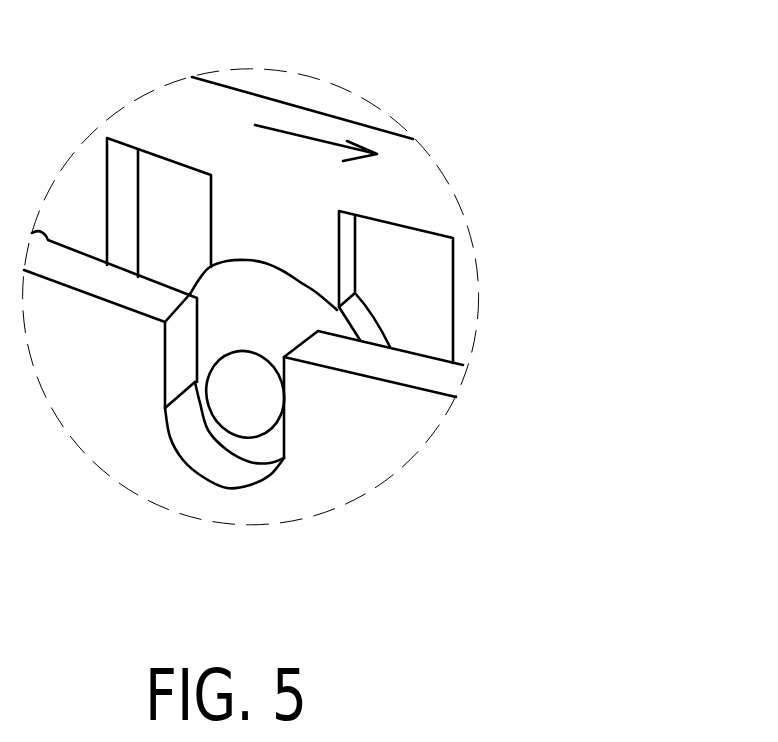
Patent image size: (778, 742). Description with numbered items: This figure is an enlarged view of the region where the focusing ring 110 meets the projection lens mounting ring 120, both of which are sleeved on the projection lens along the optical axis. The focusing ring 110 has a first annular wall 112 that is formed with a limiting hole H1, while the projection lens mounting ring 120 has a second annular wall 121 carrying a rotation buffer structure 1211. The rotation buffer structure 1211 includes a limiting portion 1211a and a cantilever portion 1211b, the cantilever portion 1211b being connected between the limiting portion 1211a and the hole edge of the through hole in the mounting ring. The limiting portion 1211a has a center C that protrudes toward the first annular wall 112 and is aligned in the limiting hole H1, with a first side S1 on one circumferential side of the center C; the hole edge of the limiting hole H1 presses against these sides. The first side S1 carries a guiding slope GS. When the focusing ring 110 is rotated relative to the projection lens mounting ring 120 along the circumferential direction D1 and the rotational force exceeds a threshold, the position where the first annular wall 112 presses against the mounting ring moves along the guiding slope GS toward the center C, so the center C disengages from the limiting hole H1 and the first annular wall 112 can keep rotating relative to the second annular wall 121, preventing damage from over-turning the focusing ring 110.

The first annular wall 112 is at (248, 319).
The focusing ring 110 is at (248, 319).
The second annular wall 121 is at (388, 191).
The projection lens mounting ring 120 is at (388, 191).
The rotation buffer structure 1211 is at (481, 274).
The limiting portion 1211a is at (293, 308).
The cantilever portion 1211b is at (303, 253).
The guiding slope GS is at (250, 293).
The circumferential direction D1 is at (307, 140).
The limiting hole H1 is at (163, 372).
The first side S1 is at (197, 377).
The center C is at (240, 415).